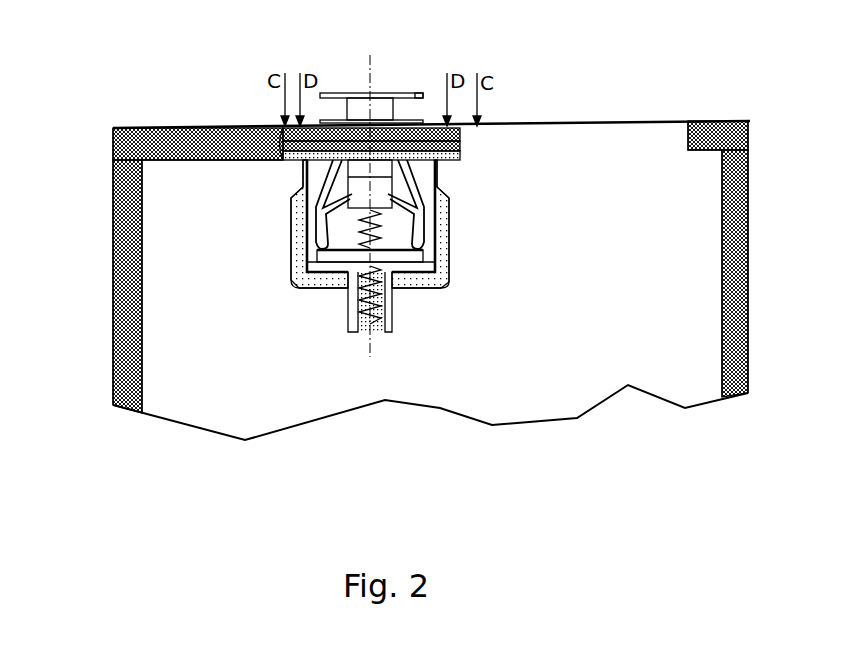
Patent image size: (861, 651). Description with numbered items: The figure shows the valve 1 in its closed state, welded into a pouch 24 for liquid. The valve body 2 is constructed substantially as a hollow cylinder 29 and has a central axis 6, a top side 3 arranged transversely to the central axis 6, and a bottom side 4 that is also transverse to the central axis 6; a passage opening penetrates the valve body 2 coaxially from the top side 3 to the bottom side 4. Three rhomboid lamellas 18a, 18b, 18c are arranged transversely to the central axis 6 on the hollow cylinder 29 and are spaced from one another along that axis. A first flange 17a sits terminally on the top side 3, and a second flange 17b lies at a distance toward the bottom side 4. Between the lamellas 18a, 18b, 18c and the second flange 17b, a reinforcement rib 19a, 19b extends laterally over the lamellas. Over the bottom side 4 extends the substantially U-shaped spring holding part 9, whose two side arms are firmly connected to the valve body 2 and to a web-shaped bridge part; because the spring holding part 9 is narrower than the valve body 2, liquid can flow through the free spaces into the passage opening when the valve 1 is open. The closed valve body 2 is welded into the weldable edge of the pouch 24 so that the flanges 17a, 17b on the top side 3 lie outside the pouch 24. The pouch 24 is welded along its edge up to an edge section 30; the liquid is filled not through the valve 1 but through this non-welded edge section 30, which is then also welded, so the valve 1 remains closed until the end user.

The valve 1 is at (454, 291).
The valve body 2 is at (400, 94).
The top side 3 is at (335, 91).
The bottom side 4 is at (388, 184).
The central axis 6 is at (368, 347).
The spring holding part 9 is at (432, 247).
The first flange 17a is at (422, 94).
The second flange 17b is at (312, 117).
The rhomboid lamella 18a is at (455, 139).
The rhomboid lamella 18b is at (453, 146).
The rhomboid lamella 18c is at (452, 156).
The reinforcement rib 19a is at (287, 140).
The reinforcement rib 19b is at (412, 280).
The pouch 24 is at (193, 253).
The hollow cylinder 29 is at (380, 176).
The edge section 30 is at (622, 131).